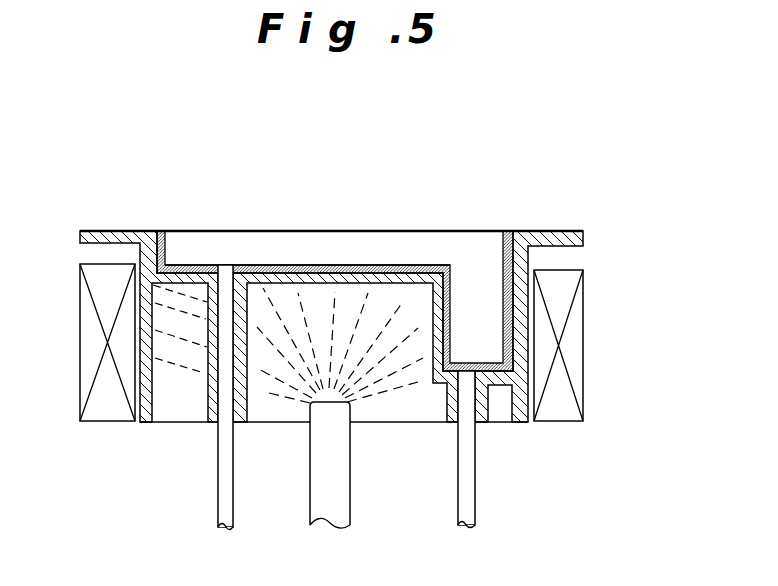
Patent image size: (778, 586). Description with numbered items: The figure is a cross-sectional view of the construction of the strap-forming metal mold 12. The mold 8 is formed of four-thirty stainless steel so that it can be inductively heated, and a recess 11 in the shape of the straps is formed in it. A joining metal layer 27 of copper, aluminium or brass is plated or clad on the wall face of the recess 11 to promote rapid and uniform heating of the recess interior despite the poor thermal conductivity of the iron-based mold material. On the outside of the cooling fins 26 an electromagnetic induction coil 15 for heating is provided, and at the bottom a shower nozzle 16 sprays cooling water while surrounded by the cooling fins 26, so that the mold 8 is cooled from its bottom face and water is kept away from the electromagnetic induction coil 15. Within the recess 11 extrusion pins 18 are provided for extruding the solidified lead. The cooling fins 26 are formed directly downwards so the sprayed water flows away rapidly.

The mold 8 is at (282, 230).
The recess 11 is at (192, 238).
The strap-forming metal mold 12 is at (565, 214).
The electromagnetic induction coil 15 is at (583, 308).
The shower nozzle 16 is at (312, 480).
The extrusion pins 18 is at (220, 488).
The cooling fins 26 is at (152, 383).
The joining metal layer 27 is at (500, 278).